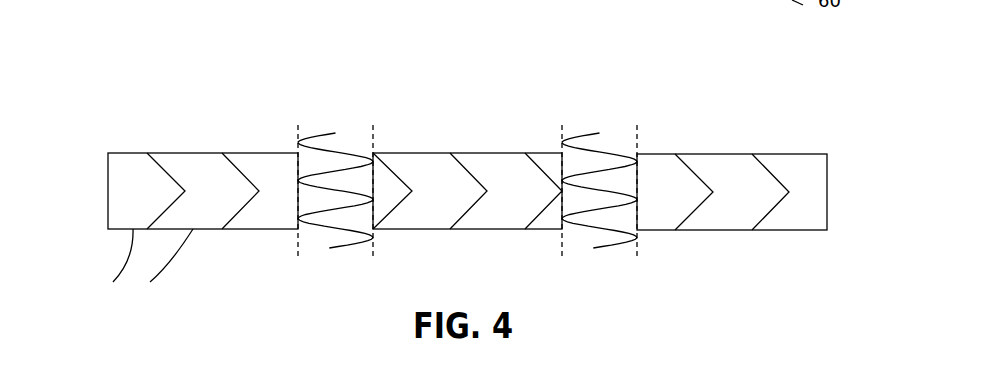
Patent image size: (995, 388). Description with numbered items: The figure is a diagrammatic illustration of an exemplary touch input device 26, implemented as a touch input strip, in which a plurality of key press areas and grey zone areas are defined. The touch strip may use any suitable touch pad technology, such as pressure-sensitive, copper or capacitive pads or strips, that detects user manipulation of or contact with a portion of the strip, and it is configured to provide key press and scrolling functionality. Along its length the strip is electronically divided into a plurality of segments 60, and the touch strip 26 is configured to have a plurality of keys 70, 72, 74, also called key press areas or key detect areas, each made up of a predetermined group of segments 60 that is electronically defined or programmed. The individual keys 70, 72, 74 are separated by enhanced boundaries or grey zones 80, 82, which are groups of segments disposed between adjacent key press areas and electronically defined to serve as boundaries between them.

The touch input device 26 is at (207, 63).
The segments 60 is at (150, 282).
The key 70 is at (180, 123).
The key 72 is at (473, 123).
The key 74 is at (748, 122).
The grey zone 80 is at (328, 108).
The grey zone 82 is at (613, 112).